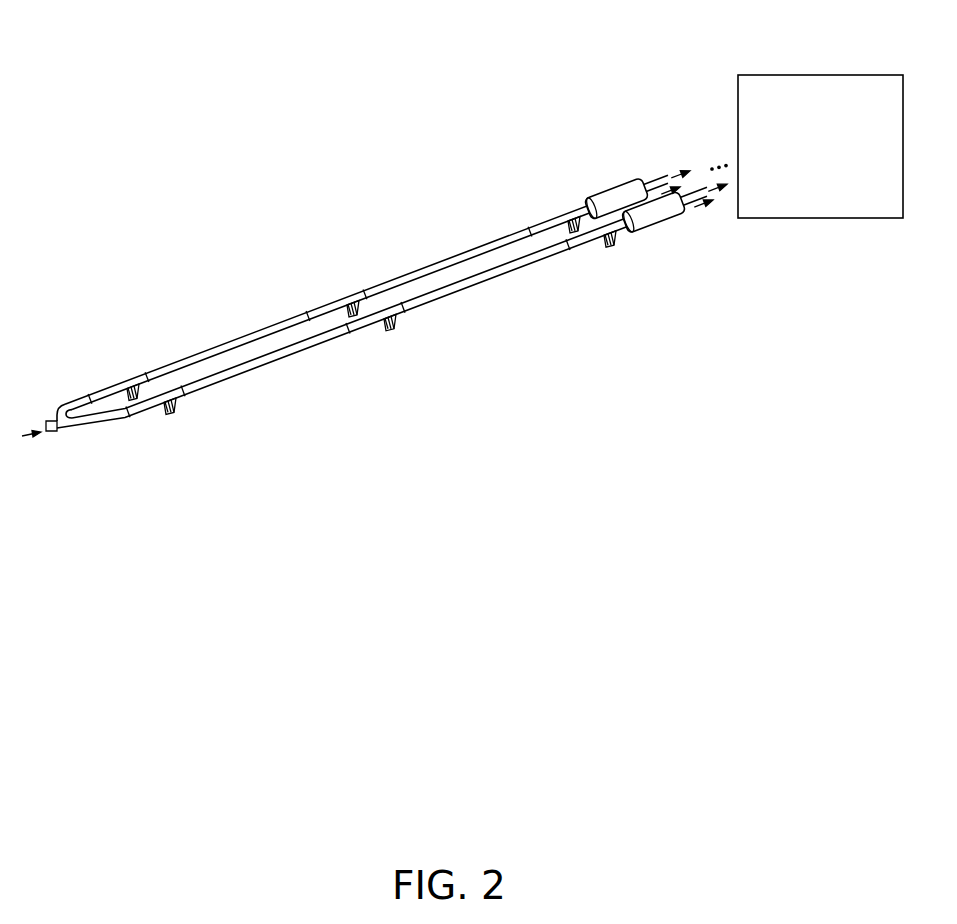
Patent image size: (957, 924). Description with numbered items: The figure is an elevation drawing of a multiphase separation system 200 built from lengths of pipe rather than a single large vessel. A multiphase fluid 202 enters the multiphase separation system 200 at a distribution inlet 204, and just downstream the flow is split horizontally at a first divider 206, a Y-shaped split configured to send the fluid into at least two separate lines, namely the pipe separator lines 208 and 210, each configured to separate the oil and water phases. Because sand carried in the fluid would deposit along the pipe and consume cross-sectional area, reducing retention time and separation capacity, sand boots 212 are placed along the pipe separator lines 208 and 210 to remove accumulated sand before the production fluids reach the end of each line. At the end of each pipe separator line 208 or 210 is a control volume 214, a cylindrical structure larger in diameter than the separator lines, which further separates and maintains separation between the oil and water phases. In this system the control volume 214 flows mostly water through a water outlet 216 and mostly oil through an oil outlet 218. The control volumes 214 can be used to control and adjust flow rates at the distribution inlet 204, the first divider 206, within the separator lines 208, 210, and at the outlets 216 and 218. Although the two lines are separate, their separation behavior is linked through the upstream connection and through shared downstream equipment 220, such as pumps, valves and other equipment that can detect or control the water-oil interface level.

The multiphase separation system 200 is at (468, 859).
The multiphase fluid 202 is at (25, 440).
The distribution inlet 204 is at (57, 418).
The first divider 206 is at (84, 428).
The pipe separator line 208 is at (111, 387).
The pipe separator line 210 is at (150, 412).
The sand boots 212 is at (353, 318).
The control volume 214 is at (628, 207).
The water outlet 216 is at (663, 186).
The oil outlet 218 is at (673, 165).
The shared downstream equipment 220 is at (786, 74).